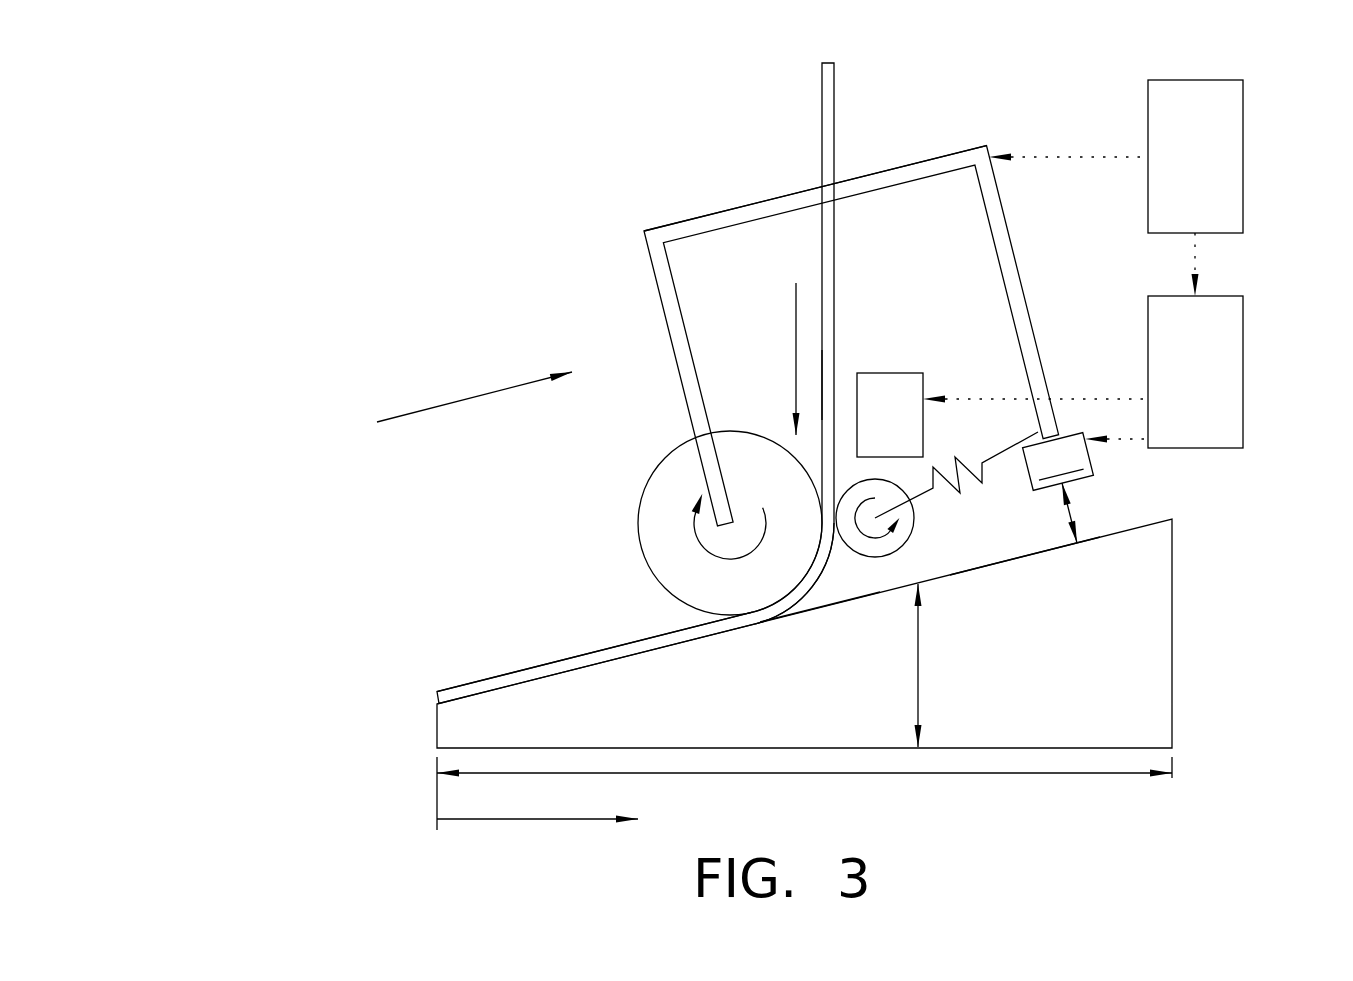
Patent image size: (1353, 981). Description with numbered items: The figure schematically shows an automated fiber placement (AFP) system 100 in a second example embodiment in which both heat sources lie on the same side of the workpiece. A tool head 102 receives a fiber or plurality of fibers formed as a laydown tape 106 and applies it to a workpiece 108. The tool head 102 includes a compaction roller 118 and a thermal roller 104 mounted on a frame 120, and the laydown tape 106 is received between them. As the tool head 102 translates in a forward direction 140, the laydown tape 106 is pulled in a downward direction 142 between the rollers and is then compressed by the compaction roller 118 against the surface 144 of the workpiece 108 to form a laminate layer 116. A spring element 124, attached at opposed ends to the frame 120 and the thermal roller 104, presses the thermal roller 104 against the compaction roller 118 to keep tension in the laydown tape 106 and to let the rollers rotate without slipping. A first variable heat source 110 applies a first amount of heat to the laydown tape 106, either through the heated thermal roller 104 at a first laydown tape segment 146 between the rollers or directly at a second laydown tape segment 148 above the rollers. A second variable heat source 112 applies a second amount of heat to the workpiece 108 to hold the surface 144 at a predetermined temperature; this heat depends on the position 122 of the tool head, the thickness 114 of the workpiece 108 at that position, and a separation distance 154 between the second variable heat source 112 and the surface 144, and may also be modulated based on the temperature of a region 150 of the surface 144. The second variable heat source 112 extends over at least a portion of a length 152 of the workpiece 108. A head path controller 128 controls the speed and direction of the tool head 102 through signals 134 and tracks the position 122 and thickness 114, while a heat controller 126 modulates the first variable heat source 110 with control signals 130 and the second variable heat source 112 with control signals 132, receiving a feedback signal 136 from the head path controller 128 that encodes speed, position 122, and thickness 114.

The automated fiber placement (AFP) system 100 is at (383, 252).
The tool head 102 is at (657, 212).
The thermal roller 104 is at (903, 546).
The laydown tape 106 is at (822, 105).
The workpiece 108 is at (1017, 644).
The first variable heat source 110 is at (917, 373).
The second variable heat source 112 is at (1058, 462).
The thickness 114 is at (920, 668).
The laminate layer 116 is at (570, 658).
The compaction roller 118 is at (650, 477).
The frame 120 is at (902, 165).
The position 122 is at (525, 819).
The spring element 124 is at (1037, 440).
The heat controller 126 is at (1228, 296).
The head path controller 128 is at (1215, 80).
The control signals 130 is at (1065, 398).
The control signals 132 is at (1130, 442).
The signals 134 is at (1067, 157).
The feedback signal 136 is at (1193, 260).
The forward direction 140 is at (462, 398).
The downward direction 142 is at (796, 348).
The surface 144 is at (1030, 554).
The first laydown tape segment 146 is at (824, 567).
The second laydown tape segment 148 is at (824, 385).
The region 150 is at (822, 608).
The length 152 is at (805, 773).
The separation distance 154 is at (1070, 512).